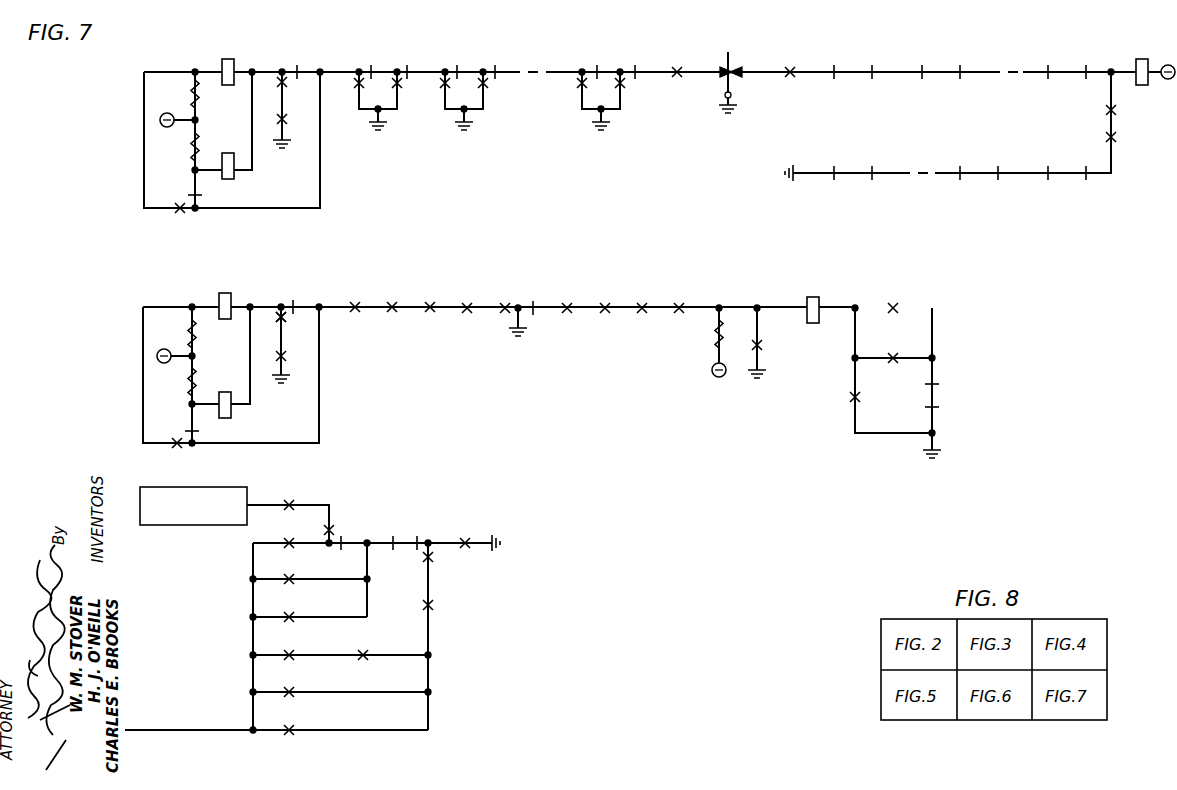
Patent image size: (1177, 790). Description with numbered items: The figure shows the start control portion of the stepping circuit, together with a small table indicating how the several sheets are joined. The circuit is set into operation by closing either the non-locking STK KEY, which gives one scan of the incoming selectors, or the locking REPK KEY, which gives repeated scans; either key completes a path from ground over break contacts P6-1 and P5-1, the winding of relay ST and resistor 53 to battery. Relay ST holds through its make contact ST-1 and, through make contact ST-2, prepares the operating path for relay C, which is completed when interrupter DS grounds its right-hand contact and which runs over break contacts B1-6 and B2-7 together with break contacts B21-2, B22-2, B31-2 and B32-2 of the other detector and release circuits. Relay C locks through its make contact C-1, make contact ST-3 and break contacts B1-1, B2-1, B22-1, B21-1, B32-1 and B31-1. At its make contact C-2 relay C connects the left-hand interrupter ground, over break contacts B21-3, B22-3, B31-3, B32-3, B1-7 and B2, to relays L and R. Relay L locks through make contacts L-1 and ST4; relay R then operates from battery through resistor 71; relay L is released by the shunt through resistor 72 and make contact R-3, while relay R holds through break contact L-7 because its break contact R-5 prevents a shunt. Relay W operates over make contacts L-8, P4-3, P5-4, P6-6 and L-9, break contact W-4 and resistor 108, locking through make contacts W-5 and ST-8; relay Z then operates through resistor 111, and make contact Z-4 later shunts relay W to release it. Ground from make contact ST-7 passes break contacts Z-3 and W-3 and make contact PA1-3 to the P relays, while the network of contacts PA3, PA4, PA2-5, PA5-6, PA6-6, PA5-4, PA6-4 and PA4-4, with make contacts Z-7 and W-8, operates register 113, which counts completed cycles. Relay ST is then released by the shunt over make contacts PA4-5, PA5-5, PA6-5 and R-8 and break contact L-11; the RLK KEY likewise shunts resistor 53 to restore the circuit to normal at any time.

The resistor 72 is at (188, 88).
The resistor 71 is at (188, 146).
The relay L is at (236, 52).
The relay R is at (236, 150).
The break contact L-7 of relay L L-7 is at (296, 64).
The make contact L-1 of relay L L-1 is at (277, 84).
The make contact ST-4 of relay ST ST4 is at (296, 129).
The break contact R-5 of relay R R-5 is at (203, 196).
The make contact R-3 of relay R R-3 is at (182, 214).
The break contact of relay B21 B21-3 is at (371, 66).
The break contact of relay B22 B22-3 is at (407, 64).
The break contact of relay B31 B31-3 is at (457, 66).
The break contact of relay B32 B32-3 is at (495, 66).
The break contact B1-7 of relay B1 B1-7 is at (597, 66).
The break contact of relay B2 is at (630, 66).
The make contact C-2 of relay C C-2 is at (676, 60).
The interrupter DS is at (729, 72).
The make contact ST-2 of relay ST ST-2 is at (791, 60).
The break contact of relay B21 B21-2 is at (840, 83).
The break contact of relay B22 B22-2 is at (877, 63).
The break contact of relay B31 B31-2 is at (927, 83).
The break contact of relay B32 B32-2 is at (967, 63).
The break contact B1-6 of relay B1 B1-6 is at (1052, 83).
The break contact B2-7 of relay B2 B2-7 is at (1087, 63).
The relay C is at (1150, 58).
The make contact C-1 of relay C C-1 is at (1126, 110).
The make contact ST-3 of relay ST ST-3 is at (1130, 137).
The break contact of relay B22 B22-1 is at (827, 164).
The break contact of relay B21 B21-1 is at (880, 183).
The break contact of relay B32 B32-1 is at (954, 164).
The break contact of relay B31 B31-1 is at (1002, 183).
The break contact B2-1 of relay B2 B2-1 is at (1050, 164).
The break contact B1-1 of relay B1 B1-1 is at (1089, 183).
The resistor 108 is at (198, 335).
The resistor 111 is at (186, 384).
The relay W is at (233, 290).
The relay Z is at (232, 390).
The make contact Z-4 of relay Z Z-4 is at (178, 449).
The break contact W-4 of relay W W-4 is at (298, 302).
The make contact W-5 of relay W W-5 is at (286, 318).
The make contact ST-8 of relay ST ST-8 is at (296, 365).
The make contact L-9 of relay L L-9 is at (351, 296).
The make contact P6-6 of relay P6 P6-6 is at (393, 300).
The make contact P5-4 of relay P5 P5-4 is at (432, 296).
The make contact P4-3 of relay P4 P4-3 is at (465, 318).
The make contact L-8 of relay L L-8 is at (518, 294).
The break contact L-11 of relay L L-11 is at (536, 316).
The make contact R-8 of relay R R-8 is at (565, 297).
The make contact PA6-5 of relay PA6 PA6-5 is at (607, 301).
The make contact PA5-5 of relay PA5 PA5-5 is at (644, 319).
The make contact PA4-5 of relay PA4 PA4-5 is at (681, 297).
The resistor 53 is at (714, 340).
The release key RLK KEY is at (773, 353).
The relay ST is at (822, 293).
The start key STK KEY is at (895, 289).
The repeat key REPK KEY is at (890, 341).
The make contact ST-1 of relay ST ST-1 is at (832, 397).
The break contact P5-1 of relay P5 P5-1 is at (950, 384).
The break contact P6-1 of relay P6 P6-1 is at (950, 407).
The register 113 is at (195, 525).
The make contact PA4-4 of relay PA4 PA4-4 is at (291, 495).
The make contact PA5-4 of relay PA5 PA5-4 is at (283, 533).
The make contact PA6-4 of relay PA6 PA6-4 is at (335, 528).
The break contact W-3 of relay W W-3 is at (397, 532).
The break contact Z-3 of relay Z Z-3 is at (422, 532).
The make contact ST-7 of relay ST ST-7 is at (466, 532).
The make contact Z-7 of relay Z Z-7 is at (434, 558).
The make contact W-8 of relay W W-8 is at (445, 605).
The contact of relay PA3 is at (289, 569).
The make contact PA1-3 of relay PA1 PA1-3 is at (289, 607).
The make contact PA5-6 of relay PA5 PA5-6 is at (287, 645).
The make contact PA6-6 of relay PA6 PA6-6 is at (366, 645).
The contact of relay PA4 is at (287, 682).
The contact of relay PA2 PA2-5 is at (291, 720).